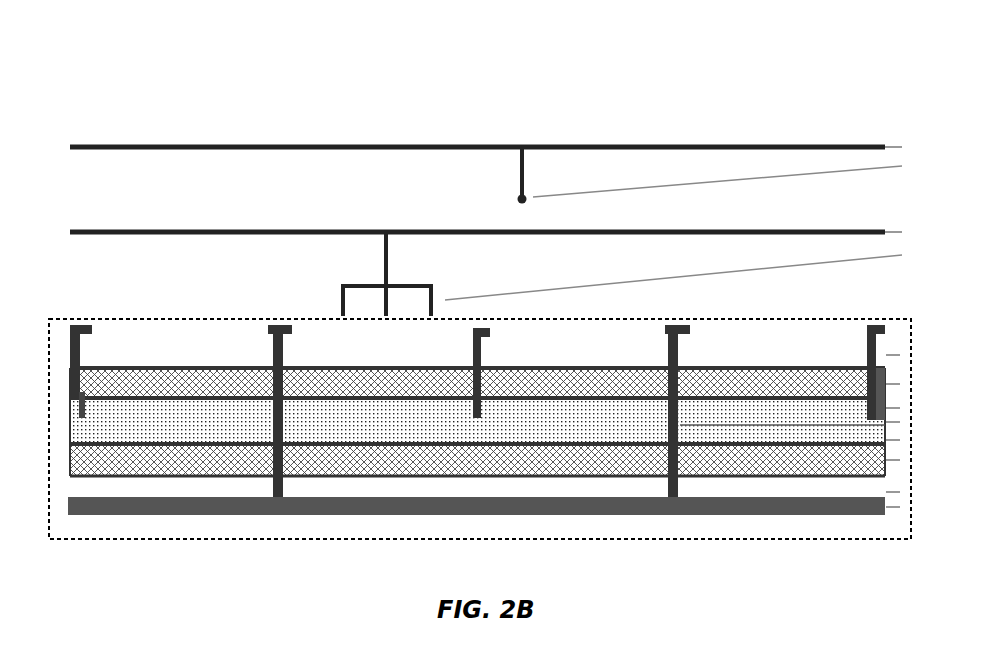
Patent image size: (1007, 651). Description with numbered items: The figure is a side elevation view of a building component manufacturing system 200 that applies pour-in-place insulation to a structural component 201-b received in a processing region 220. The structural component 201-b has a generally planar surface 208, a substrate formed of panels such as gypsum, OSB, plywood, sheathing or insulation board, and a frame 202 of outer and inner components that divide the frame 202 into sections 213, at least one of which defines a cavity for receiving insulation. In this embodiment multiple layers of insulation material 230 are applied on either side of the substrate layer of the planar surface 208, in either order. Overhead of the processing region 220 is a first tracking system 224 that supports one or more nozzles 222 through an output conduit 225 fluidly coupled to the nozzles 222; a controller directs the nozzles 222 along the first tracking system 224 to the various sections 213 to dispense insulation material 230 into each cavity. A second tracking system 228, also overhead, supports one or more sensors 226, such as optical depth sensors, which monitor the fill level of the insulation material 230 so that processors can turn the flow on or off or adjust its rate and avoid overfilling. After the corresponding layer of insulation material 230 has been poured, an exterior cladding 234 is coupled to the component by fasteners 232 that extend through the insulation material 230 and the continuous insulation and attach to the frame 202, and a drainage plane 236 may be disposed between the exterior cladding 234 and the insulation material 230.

The building component manufacturing system 200 is at (102, 86).
The structural component 201-b is at (86, 266).
The frame 202 is at (880, 300).
The generally planar surface 208 is at (549, 430).
The sections 213 is at (114, 330).
The processing region 220 is at (252, 540).
The nozzles 222 is at (430, 280).
The first tracking system 224 is at (228, 231).
The output conduit 225 is at (386, 231).
The sensors 226 is at (528, 160).
The second tracking system 228 is at (622, 146).
The insulation material 230 is at (326, 380).
The fasteners 232 is at (678, 505).
The exterior cladding 234 is at (617, 508).
The drainage plane 236 is at (782, 492).